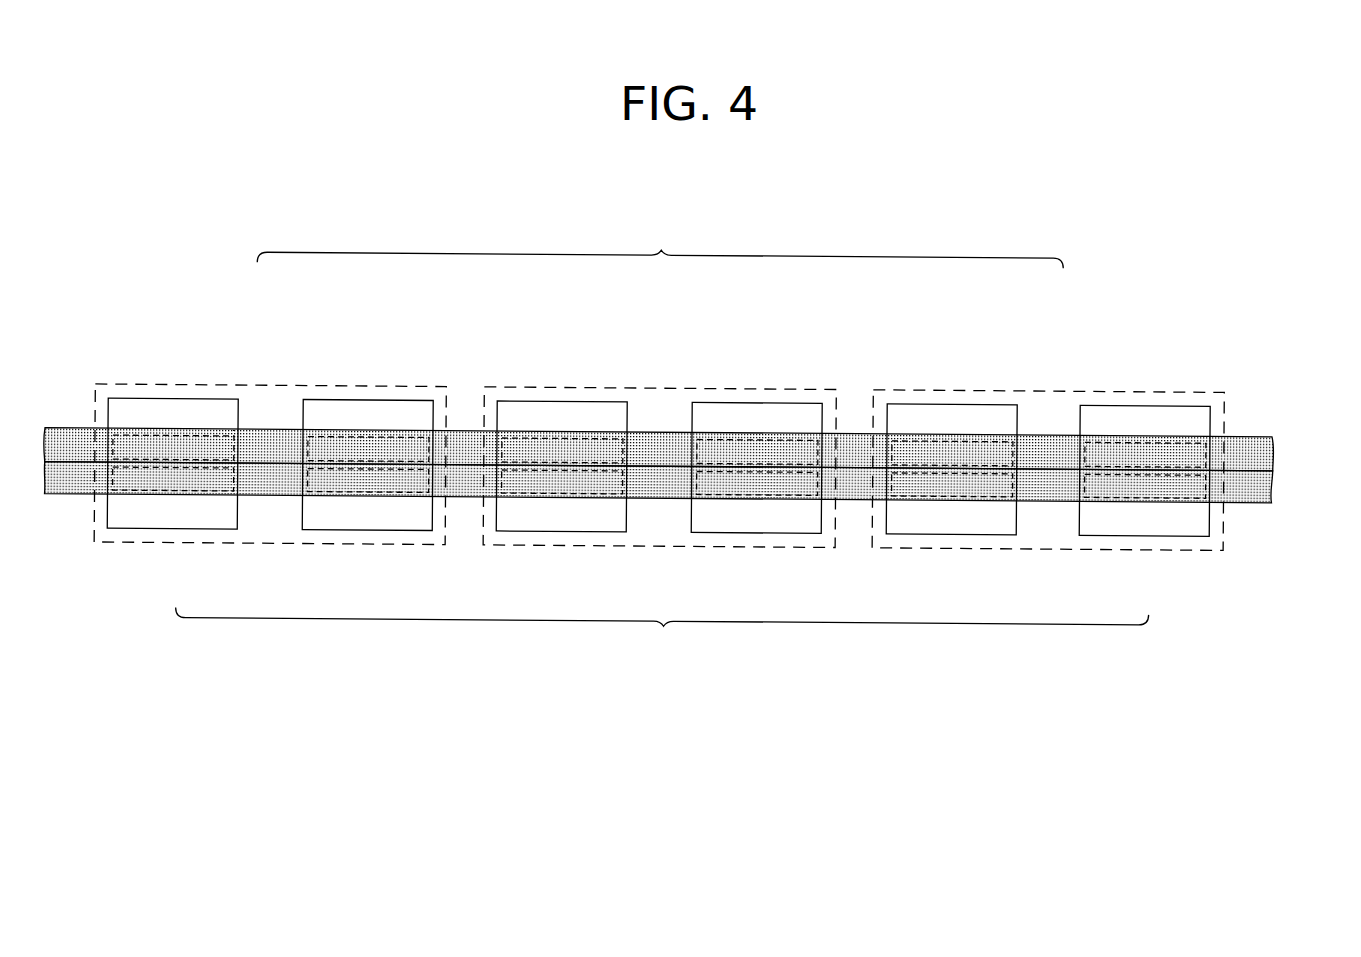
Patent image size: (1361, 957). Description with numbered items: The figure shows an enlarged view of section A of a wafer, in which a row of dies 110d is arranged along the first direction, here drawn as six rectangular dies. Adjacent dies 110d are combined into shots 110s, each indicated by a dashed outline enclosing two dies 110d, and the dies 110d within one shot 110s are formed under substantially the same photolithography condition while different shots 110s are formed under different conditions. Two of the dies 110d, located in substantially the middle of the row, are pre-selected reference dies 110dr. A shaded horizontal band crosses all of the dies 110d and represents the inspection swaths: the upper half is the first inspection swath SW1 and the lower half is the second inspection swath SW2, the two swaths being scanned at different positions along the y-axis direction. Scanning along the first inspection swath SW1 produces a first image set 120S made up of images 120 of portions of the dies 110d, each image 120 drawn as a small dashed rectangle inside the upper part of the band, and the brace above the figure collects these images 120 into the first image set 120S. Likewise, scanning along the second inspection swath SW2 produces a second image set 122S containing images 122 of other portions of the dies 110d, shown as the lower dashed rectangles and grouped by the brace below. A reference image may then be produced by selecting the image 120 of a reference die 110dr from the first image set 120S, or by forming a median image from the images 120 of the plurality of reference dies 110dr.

The shot 110s is at (95, 384).
The die 110d is at (153, 398).
The reference die 110dr is at (712, 393).
The image 120 is at (199, 434).
The first image set 120S is at (660, 244).
The image 122 is at (197, 490).
The second image set 122S is at (661, 633).
The first inspection swath SW1 is at (1262, 443).
The second inspection swath SW2 is at (1265, 478).
The section A is at (1201, 223).